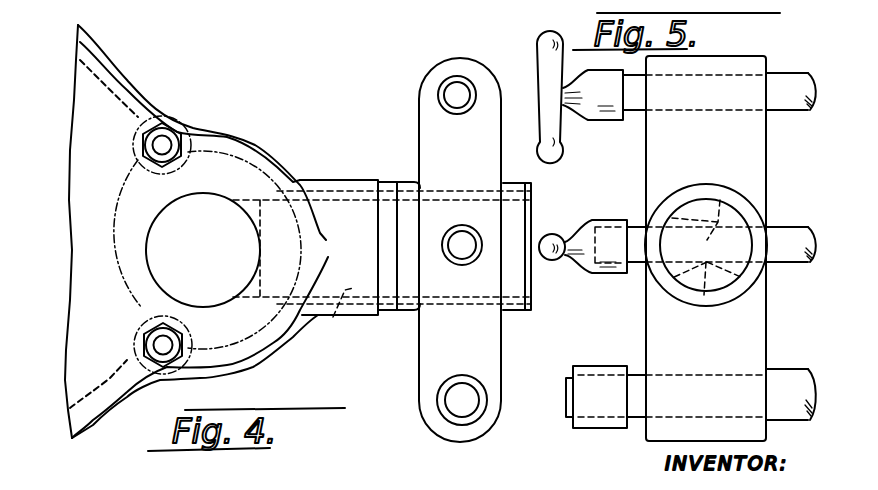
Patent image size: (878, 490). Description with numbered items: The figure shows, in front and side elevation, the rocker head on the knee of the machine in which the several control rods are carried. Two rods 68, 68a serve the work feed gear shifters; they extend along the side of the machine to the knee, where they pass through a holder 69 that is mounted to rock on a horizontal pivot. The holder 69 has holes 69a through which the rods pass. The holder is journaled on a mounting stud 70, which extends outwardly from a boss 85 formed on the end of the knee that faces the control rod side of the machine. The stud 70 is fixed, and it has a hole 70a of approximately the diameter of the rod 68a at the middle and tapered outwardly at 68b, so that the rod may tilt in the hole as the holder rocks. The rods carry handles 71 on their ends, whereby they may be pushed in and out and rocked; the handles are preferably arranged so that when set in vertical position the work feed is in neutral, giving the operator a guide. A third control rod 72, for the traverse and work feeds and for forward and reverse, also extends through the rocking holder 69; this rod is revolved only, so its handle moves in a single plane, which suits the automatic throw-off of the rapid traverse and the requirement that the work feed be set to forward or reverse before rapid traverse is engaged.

In FIG. 5, the rod 68 is at (789, 108).
In FIG. 5, the rod 68a is at (777, 230).
In FIG. 5, the tapered portion of hole 68b is at (720, 200).
In FIG. 4, the holder 69 is at (428, 140).
In FIG. 5, the holder 69 is at (652, 145).
In FIG. 4, the holes 69a is at (450, 93).
In FIG. 4, the mounting stud 70 is at (333, 317).
In FIG. 5, the mounting stud 70 is at (673, 268).
In FIG. 5, the hole 70a is at (704, 295).
In FIG. 5, the handles 71 is at (540, 94).
In FIG. 4, the control rod 72 is at (472, 403).
In FIG. 5, the control rod 72 is at (642, 412).
In FIG. 4, the boss 85 is at (360, 317).